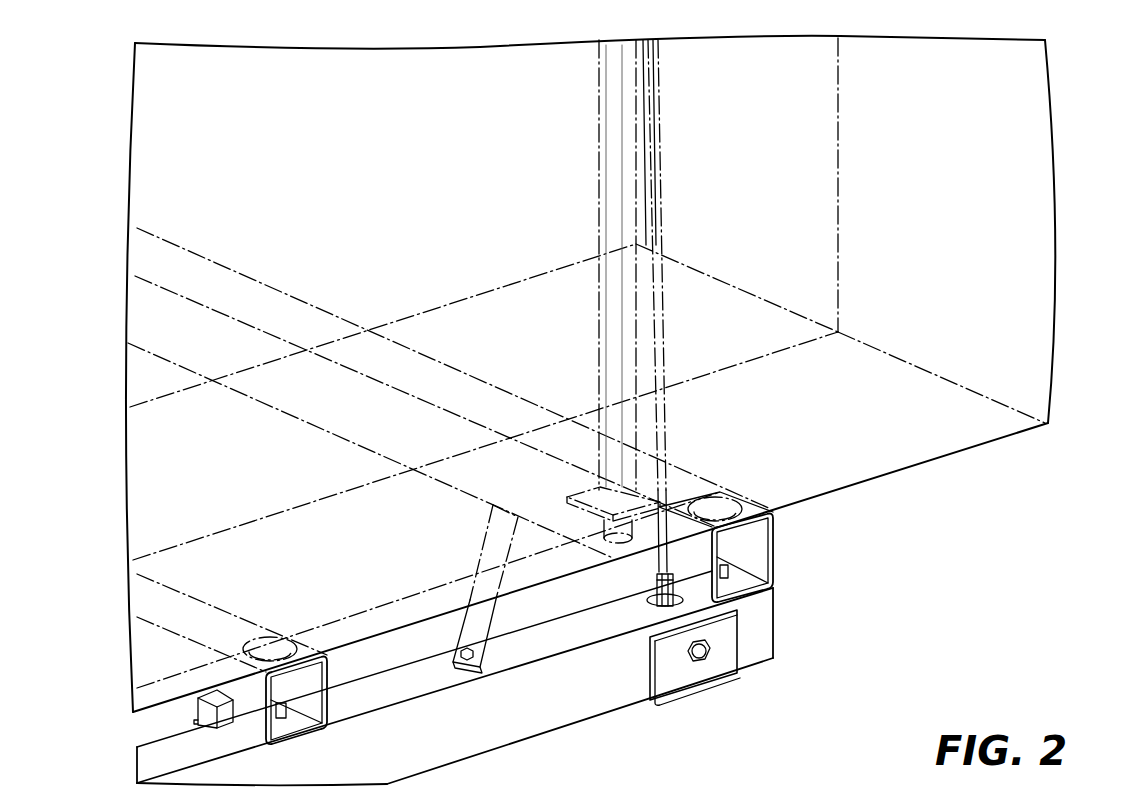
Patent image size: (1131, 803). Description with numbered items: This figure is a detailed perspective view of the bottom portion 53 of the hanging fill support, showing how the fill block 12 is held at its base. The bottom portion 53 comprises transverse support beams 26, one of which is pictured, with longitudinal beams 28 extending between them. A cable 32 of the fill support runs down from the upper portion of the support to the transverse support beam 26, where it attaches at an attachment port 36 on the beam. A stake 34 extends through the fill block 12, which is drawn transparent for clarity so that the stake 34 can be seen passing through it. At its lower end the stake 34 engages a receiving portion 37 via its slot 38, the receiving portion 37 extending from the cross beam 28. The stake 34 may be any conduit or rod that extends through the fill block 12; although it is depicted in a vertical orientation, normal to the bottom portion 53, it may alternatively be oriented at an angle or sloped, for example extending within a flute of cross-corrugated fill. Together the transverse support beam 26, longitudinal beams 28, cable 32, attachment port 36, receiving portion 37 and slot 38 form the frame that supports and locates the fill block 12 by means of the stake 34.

The fill block 12 is at (1047, 306).
The transverse support beam 26 is at (777, 612).
The longitudinal beam 28 is at (777, 548).
The cable 32 is at (665, 420).
The stake 34 is at (598, 332).
The attachment port 36 is at (647, 598).
The receiving portion 37 is at (687, 481).
The slot 38 is at (638, 493).
The bottom portion 53 is at (781, 652).